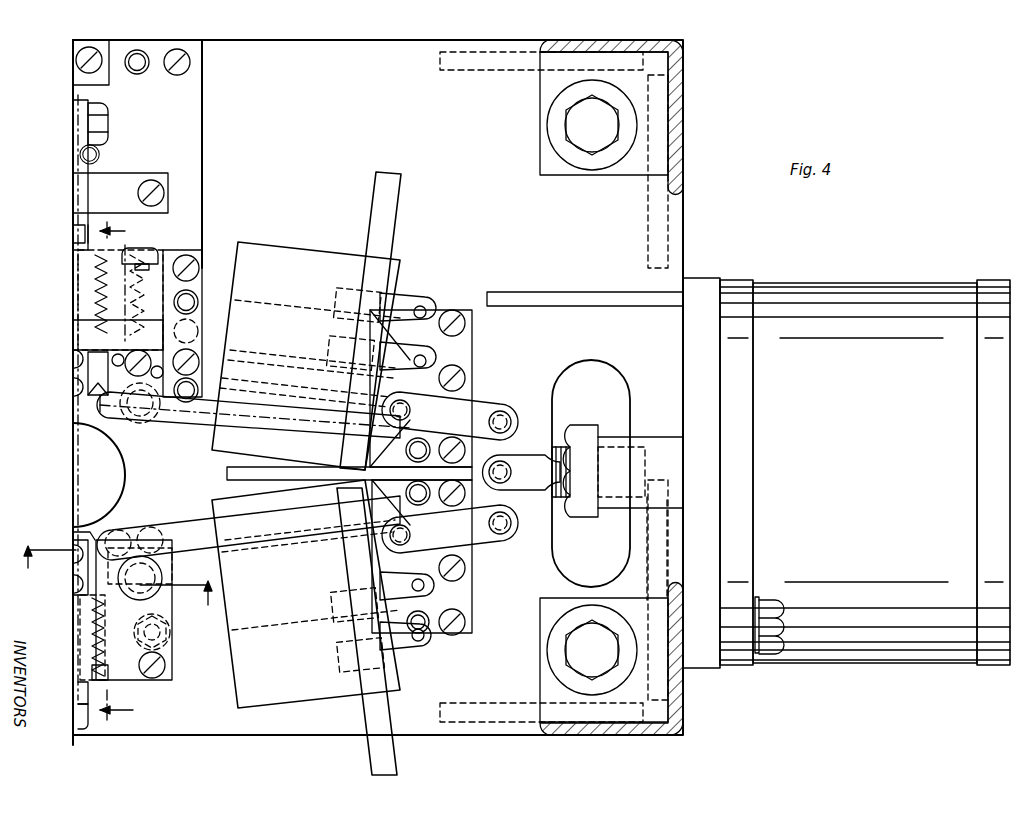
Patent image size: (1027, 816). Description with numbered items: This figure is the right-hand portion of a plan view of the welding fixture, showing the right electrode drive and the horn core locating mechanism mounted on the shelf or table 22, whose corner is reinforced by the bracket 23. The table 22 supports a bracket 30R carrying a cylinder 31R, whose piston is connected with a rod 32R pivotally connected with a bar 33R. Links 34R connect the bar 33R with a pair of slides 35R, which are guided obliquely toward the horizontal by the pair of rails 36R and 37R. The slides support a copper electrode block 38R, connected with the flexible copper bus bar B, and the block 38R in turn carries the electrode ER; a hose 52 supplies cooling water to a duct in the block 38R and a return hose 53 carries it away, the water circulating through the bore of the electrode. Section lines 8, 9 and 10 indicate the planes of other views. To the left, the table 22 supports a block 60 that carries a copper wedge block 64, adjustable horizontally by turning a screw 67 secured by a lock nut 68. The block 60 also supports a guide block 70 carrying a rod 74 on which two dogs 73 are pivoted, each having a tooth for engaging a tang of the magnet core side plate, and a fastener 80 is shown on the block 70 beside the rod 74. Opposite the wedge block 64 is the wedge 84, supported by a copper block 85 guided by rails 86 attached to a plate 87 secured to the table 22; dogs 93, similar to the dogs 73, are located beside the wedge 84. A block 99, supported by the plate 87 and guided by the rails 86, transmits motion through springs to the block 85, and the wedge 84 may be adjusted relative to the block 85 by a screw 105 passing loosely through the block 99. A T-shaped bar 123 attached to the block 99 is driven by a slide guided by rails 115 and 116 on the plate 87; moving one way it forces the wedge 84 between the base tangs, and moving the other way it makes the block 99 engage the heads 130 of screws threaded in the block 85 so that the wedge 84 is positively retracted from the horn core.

The table 22 is at (376, 40).
The corner bracket 23 is at (620, 40).
The rail 115 is at (100, 40).
The plate 87 is at (183, 40).
The bar 123 is at (73, 150).
The rail 116 is at (73, 195).
The screw 105 is at (73, 235).
The section line 10 is at (120, 471).
The head 130 is at (148, 253).
The rail 86 is at (197, 250).
The block 99 is at (78, 280).
The copper block 85 is at (78, 338).
The wedge 84 is at (76, 378).
The dog 93 is at (84, 400).
The electrode ER is at (153, 420).
The section line 8 is at (402, 442).
The dog 73 is at (100, 535).
The copper wedge block 64 is at (78, 545).
The section line 9 is at (118, 581).
The guide block 70 is at (172, 597).
The rod 74 is at (168, 583).
The nut 80 is at (135, 600).
The block 60 is at (85, 633).
The lock nut 68 is at (78, 691).
The screw 67 is at (78, 716).
The copper electrode block 38R is at (310, 250).
The copper bus bar B is at (400, 193).
The rail 37R is at (349, 475).
The rail 36R is at (439, 308).
The return hose 53 is at (418, 294).
The hose 52 is at (412, 349).
The slide 35R is at (425, 376).
The link 34R is at (488, 400).
The bar 33R is at (516, 449).
The rod 32R is at (658, 437).
The bracket 30R is at (710, 276).
The cylinder 31R is at (883, 285).